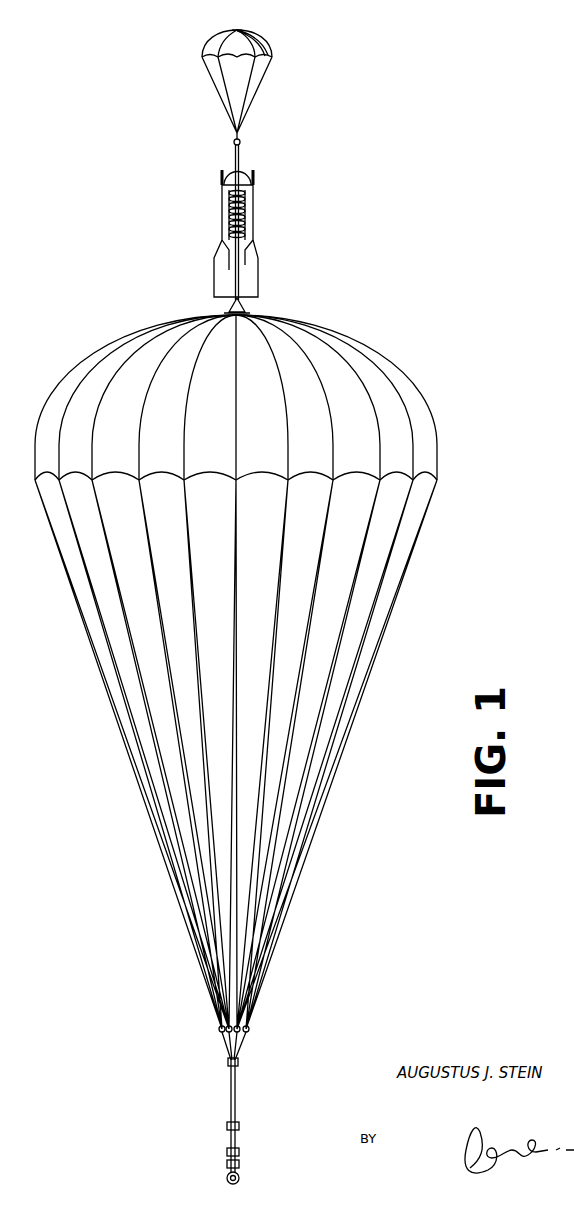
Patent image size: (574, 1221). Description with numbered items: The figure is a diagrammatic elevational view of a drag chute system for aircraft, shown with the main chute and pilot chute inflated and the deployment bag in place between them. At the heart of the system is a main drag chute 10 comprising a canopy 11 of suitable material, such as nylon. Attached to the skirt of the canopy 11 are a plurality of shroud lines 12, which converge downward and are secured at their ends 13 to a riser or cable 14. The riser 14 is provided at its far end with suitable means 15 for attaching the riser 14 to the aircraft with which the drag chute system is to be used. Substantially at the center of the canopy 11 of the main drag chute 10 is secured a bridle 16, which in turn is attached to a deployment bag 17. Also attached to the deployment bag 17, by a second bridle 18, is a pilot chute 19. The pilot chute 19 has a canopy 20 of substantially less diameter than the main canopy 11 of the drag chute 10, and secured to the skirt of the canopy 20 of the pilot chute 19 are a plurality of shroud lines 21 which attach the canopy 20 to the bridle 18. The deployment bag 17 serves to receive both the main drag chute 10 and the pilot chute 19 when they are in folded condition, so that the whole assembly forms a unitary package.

The main drag chute 10 is at (439, 461).
The canopy 11 is at (362, 362).
The shroud lines 12 is at (356, 652).
The ends 13 is at (219, 1030).
The riser 14 is at (236, 1086).
The attaching means 15 is at (227, 1172).
The bridle 16 is at (231, 304).
The deployment bag 17 is at (258, 234).
The bridle 18 is at (233, 151).
The pilot chute 19 is at (268, 55).
The canopy 20 is at (228, 34).
The shroud lines 21 is at (218, 100).